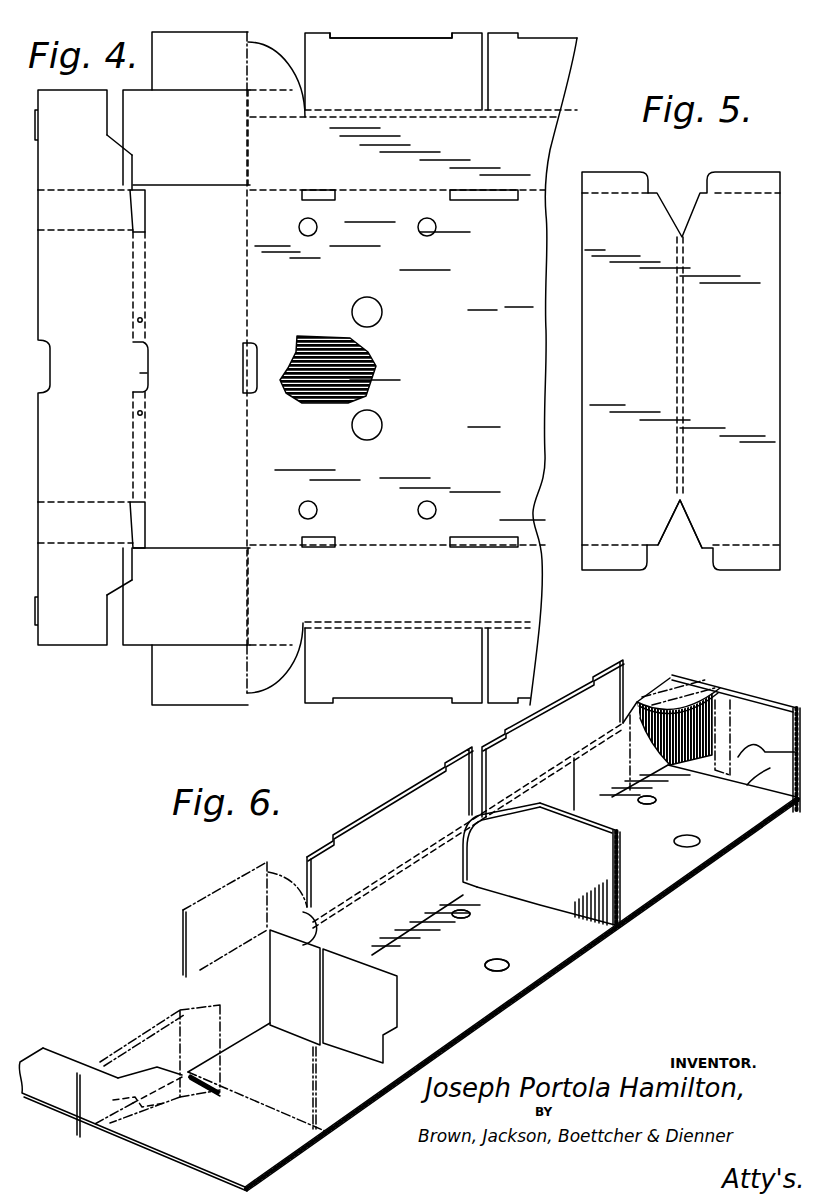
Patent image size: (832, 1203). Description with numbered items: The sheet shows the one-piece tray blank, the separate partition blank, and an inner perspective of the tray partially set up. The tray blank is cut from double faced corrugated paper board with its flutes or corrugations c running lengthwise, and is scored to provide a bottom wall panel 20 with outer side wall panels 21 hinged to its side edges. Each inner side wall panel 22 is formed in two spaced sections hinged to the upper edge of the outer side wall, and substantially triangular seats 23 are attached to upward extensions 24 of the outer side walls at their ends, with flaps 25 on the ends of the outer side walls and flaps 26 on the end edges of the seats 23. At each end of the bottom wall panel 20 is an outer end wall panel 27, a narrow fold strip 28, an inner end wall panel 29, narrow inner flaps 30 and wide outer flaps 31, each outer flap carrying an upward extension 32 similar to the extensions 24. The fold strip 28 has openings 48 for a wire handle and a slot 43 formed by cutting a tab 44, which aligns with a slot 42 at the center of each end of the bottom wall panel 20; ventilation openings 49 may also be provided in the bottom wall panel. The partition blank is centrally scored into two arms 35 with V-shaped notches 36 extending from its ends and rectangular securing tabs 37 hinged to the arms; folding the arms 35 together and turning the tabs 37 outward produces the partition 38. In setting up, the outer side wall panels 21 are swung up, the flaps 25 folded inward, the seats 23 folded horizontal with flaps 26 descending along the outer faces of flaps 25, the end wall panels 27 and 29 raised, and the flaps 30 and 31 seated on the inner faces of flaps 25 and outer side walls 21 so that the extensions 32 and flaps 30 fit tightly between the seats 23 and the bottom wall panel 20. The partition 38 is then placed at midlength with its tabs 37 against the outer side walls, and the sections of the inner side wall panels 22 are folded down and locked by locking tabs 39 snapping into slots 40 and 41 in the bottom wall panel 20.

In FIG. 4, the bottom wall panel 20 is at (413, 371).
In FIG. 6, the bottom wall panel 20 is at (492, 976).
In FIG. 4, the outer side wall panels 21 is at (405, 369).
In FIG. 6, the outer side wall panels 21 is at (490, 839).
In FIG. 4, the inner side wall panels 22 is at (441, 368).
In FIG. 6, the inner side wall panels 22 is at (465, 783).
In FIG. 4, the substantially triangular seats 23 is at (268, 56).
In FIG. 6, the substantially triangular seats 23 is at (680, 700).
In FIG. 4, the upward extensions 24 is at (275, 100).
In FIG. 4, the flaps 25 is at (186, 367).
In FIG. 6, the flaps 25 is at (783, 790).
In FIG. 4, the flaps 26 is at (120, 685).
In FIG. 6, the flaps 26 is at (733, 728).
In FIG. 4, the outer end wall panels 27 is at (224, 367).
In FIG. 6, the outer end wall panels 27 is at (350, 1108).
In FIG. 4, the fold strip 28 is at (142, 264).
In FIG. 6, the fold strip 28 is at (762, 702).
In FIG. 4, the inner end wall panel 29 is at (64, 366).
In FIG. 6, the inner end wall panel 29 is at (745, 790).
In FIG. 4, the inner flaps 30 is at (91, 369).
In FIG. 6, the inner flaps 30 is at (707, 735).
In FIG. 4, the outer flaps 31 is at (83, 367).
In FIG. 6, the outer flaps 31 is at (597, 773).
In FIG. 4, the upward extension 32 is at (127, 165).
In FIG. 6, the upward extension 32 is at (647, 716).
In FIG. 5, the arms 35 is at (681, 371).
In FIG. 5, the V-shaped notches 36 is at (670, 216).
In FIG. 5, the securing tabs 37 is at (618, 158).
In FIG. 6, the securing tabs 37 is at (478, 856).
In FIG. 5, the partition 38 is at (690, 540).
In FIG. 6, the partition 38 is at (548, 865).
In FIG. 4, the locking tabs 39 is at (455, 36).
In FIG. 4, the slots 40 is at (322, 197).
In FIG. 6, the slots 40 is at (650, 803).
In FIG. 4, the slots 41 is at (483, 197).
In FIG. 6, the slots 41 is at (480, 895).
In FIG. 4, the slot 42 is at (256, 356).
In FIG. 4, the slot 43 is at (150, 362).
In FIG. 4, the tab 44 is at (148, 375).
In FIG. 4, the openings 48 is at (143, 320).
In FIG. 4, the openings 49 is at (376, 430).
In FIG. 6, the openings 49 is at (496, 960).
In FIG. 4, the flutes or corrugations C is at (372, 362).